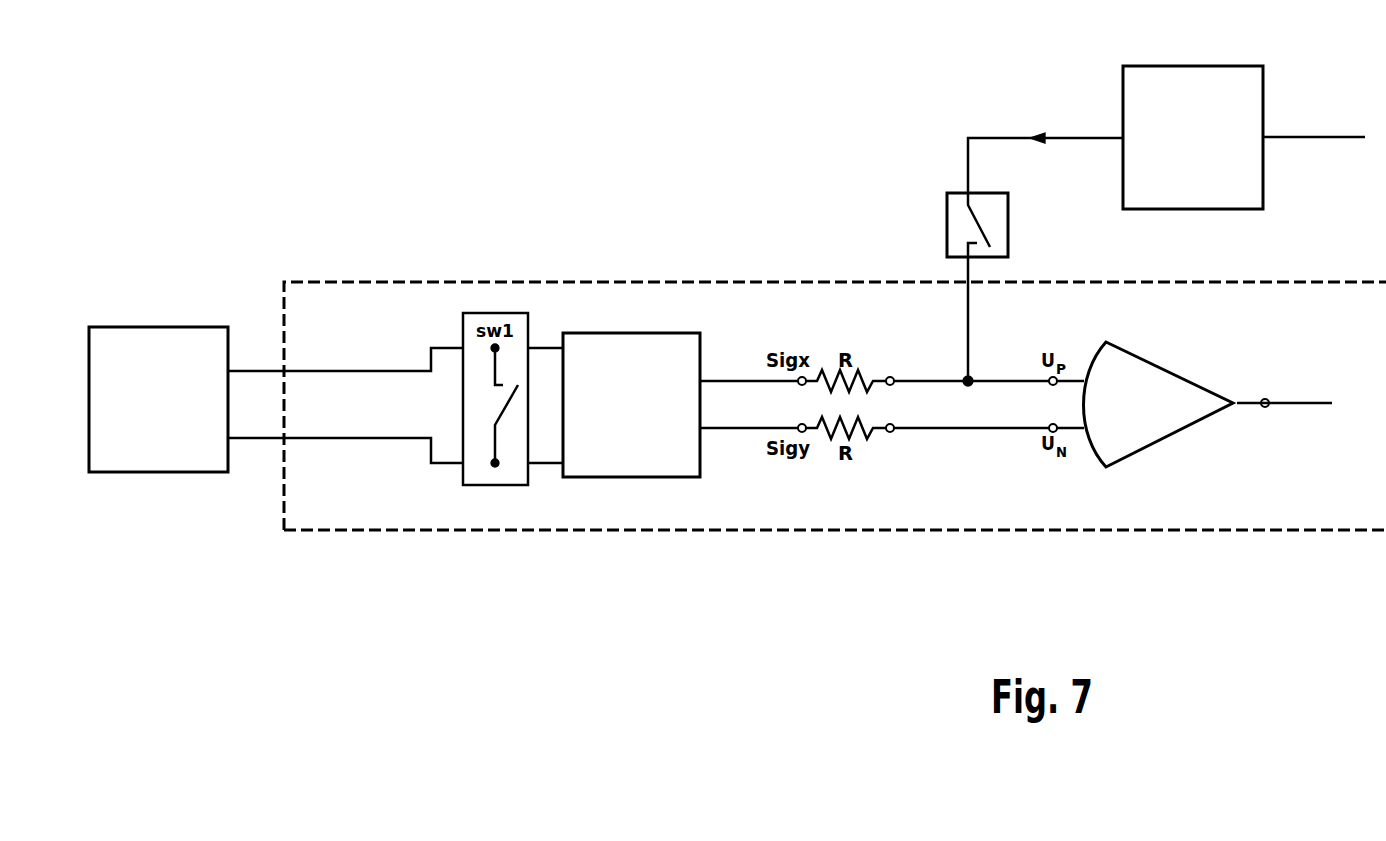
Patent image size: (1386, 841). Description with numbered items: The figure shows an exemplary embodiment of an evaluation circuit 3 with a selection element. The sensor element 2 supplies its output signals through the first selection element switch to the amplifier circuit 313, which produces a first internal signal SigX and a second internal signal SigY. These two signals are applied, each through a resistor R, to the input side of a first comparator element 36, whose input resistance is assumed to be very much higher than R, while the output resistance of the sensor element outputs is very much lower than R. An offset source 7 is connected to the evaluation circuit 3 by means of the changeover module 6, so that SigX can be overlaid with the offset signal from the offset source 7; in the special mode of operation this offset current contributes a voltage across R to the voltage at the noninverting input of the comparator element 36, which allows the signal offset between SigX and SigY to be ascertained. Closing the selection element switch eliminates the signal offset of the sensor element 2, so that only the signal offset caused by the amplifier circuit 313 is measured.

The sensor element 2 is at (160, 474).
The evaluation circuit 3 is at (968, 532).
The amplifier circuit 313 is at (630, 333).
The first comparator element 36 is at (1150, 435).
The changeover module 6 is at (947, 222).
The offset source 7 is at (1263, 96).